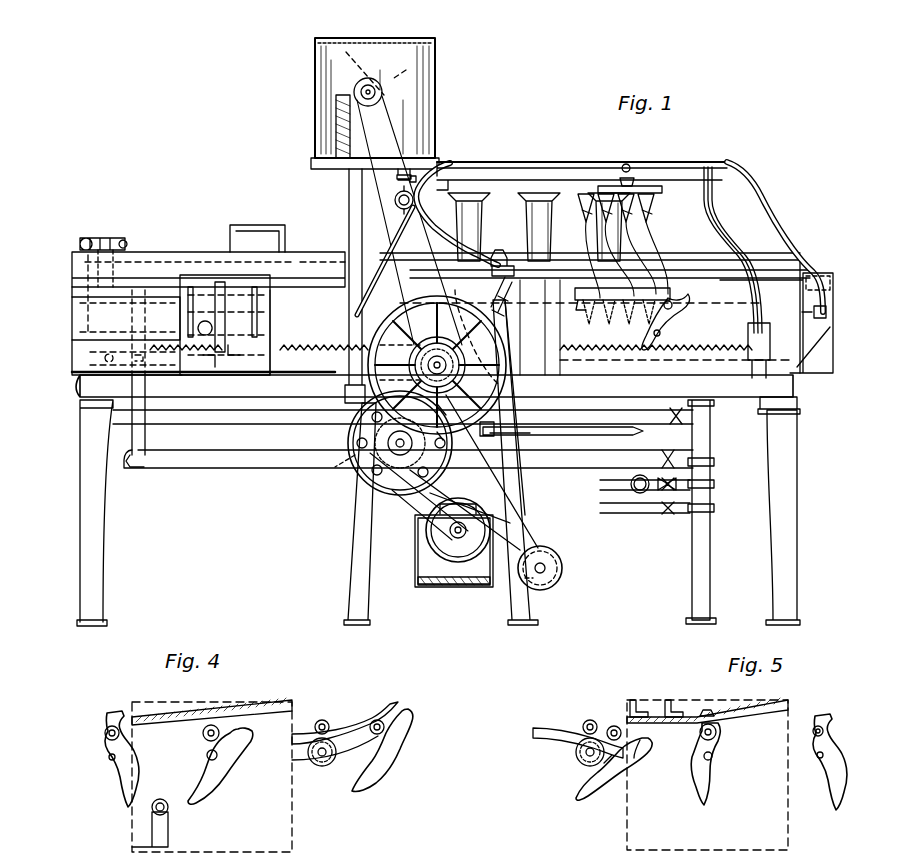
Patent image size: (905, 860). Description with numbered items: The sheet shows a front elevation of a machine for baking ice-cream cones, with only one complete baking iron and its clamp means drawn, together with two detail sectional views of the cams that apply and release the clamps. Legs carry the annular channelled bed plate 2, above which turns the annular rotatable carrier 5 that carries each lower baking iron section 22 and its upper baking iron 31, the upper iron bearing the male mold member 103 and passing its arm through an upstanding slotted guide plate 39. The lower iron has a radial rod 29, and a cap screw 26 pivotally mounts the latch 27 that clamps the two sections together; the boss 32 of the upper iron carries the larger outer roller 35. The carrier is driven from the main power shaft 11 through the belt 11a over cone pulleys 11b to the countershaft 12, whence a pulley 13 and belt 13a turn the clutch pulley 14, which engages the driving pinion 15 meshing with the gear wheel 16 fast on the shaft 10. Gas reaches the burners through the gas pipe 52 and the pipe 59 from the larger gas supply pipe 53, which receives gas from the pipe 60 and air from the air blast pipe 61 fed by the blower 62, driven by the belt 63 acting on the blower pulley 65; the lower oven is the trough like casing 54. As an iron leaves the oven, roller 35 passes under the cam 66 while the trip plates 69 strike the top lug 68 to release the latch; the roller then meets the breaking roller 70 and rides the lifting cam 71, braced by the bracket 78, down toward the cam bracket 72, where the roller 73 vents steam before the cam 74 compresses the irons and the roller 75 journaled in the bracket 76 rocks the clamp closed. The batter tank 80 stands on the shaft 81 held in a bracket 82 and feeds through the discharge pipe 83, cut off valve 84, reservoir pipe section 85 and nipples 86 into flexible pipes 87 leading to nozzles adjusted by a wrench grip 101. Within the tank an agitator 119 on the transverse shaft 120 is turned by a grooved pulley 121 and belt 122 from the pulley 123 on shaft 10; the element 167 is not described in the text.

In FIG. 1, the annular channelled bed plate 2 is at (76, 388).
In FIG. 1, the annular rotatable carrier 5 is at (72, 335).
In FIG. 1, the shaft 10 is at (505, 367).
In FIG. 1, the main power shaft 11 is at (352, 460).
In FIG. 1, the belt 11a is at (526, 522).
In FIG. 1, the cone pulleys 11b is at (463, 522).
In FIG. 1, the countershaft 12 is at (545, 565).
In FIG. 1, the pulley 13 is at (560, 602).
In FIG. 1, the belt 13a is at (520, 483).
In FIG. 1, the clutch pulley 14 is at (347, 479).
In FIG. 1, the driving pinion 15 is at (372, 446).
In FIG. 1, the gear wheel 16 is at (504, 404).
In FIG. 1, the baking iron section 22 is at (598, 310).
In FIG. 1, the latch 27 is at (678, 315).
In FIG. 4, the latch 27 is at (318, 762).
In FIG. 5, the latch 27 is at (826, 718).
In FIG. 4, the cap screw 26 is at (108, 757).
In FIG. 5, the cap screw 26 is at (823, 758).
In FIG. 1, the radial rod 29 is at (784, 394).
In FIG. 1, the upper baking iron 31 is at (644, 192).
In FIG. 1, the boss 32 is at (638, 180).
In FIG. 4, the outer roller 35 is at (352, 710).
In FIG. 5, the outer roller 35 is at (814, 735).
In FIG. 1, the slotted guide plate 39 is at (512, 226).
In FIG. 1, the gas pipe 52 is at (214, 444).
In FIG. 1, the gas supply pipe 53 is at (710, 440).
In FIG. 1, the trough like casing 54 is at (75, 368).
In FIG. 1, the pipe 59 is at (218, 470).
In FIG. 1, the pipe 60 is at (636, 494).
In FIG. 1, the air blast pipe 61 is at (668, 506).
In FIG. 1, the blower 62 is at (458, 584).
In FIG. 1, the belt 63 is at (416, 541).
In FIG. 1, the blower pulley 65 is at (422, 560).
In FIG. 5, the cam 66 is at (748, 704).
In FIG. 5, the top lug 68 is at (822, 712).
In FIG. 1, the trip plates 69 is at (814, 274).
In FIG. 5, the trip plates 69 is at (688, 702).
In FIG. 1, the breaking roller 70 is at (824, 310).
In FIG. 5, the breaking roller 70 is at (584, 740).
In FIG. 1, the lifting cam 71 is at (582, 188).
In FIG. 4, the lifting cam 71 is at (388, 710).
In FIG. 5, the lifting cam 71 is at (532, 752).
In FIG. 1, the cam bracket 72 is at (178, 318).
In FIG. 4, the cam bracket 72 is at (285, 813).
In FIG. 4, the roller 73 is at (324, 768).
In FIG. 4, the cam 74 is at (252, 699).
In FIG. 4, the roller 75 is at (152, 809).
In FIG. 4, the bracket 76 is at (148, 829).
In FIG. 1, the bracket 78 is at (741, 226).
In FIG. 1, the batter tank 80 is at (400, 108).
In FIG. 1, the shaft 81 is at (348, 204).
In FIG. 1, the bracket 82 is at (350, 392).
In FIG. 1, the discharge pipe 83 is at (397, 184).
In FIG. 1, the cut off valve 84 is at (437, 170).
In FIG. 1, the reservoir pipe section 85 is at (397, 204).
In FIG. 1, the nipples 86 is at (412, 208).
In FIG. 1, the flexible pipe 87 is at (440, 230).
In FIG. 1, the wrench grip 101 is at (659, 333).
In FIG. 1, the male mold member 103 is at (658, 203).
In FIG. 1, the agitator 119 is at (413, 62).
In FIG. 1, the transverse shaft 120 is at (338, 92).
In FIG. 1, the grooved pulley 121 is at (356, 88).
In FIG. 1, the belt 122 is at (395, 138).
In FIG. 1, the pulley 123 is at (415, 365).
In FIG. 5, the plate 167 is at (790, 785).